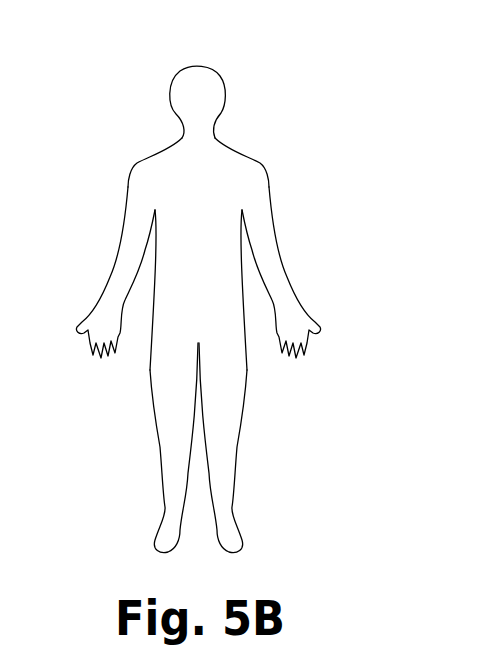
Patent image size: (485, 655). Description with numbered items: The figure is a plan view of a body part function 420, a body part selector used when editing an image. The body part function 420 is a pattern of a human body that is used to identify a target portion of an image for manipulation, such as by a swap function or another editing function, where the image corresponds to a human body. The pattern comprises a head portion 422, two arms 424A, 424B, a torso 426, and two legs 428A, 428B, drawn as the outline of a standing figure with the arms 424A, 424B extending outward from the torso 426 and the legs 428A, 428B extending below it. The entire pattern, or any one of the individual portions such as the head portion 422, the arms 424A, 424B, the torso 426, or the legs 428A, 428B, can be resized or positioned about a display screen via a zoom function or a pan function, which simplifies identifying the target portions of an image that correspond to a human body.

The body part function 420 is at (210, 281).
The head portion 422 is at (200, 83).
The arm 424A is at (115, 247).
The arm 424B is at (282, 245).
The torso 426 is at (208, 278).
The leg 428A is at (167, 452).
The leg 428B is at (228, 458).